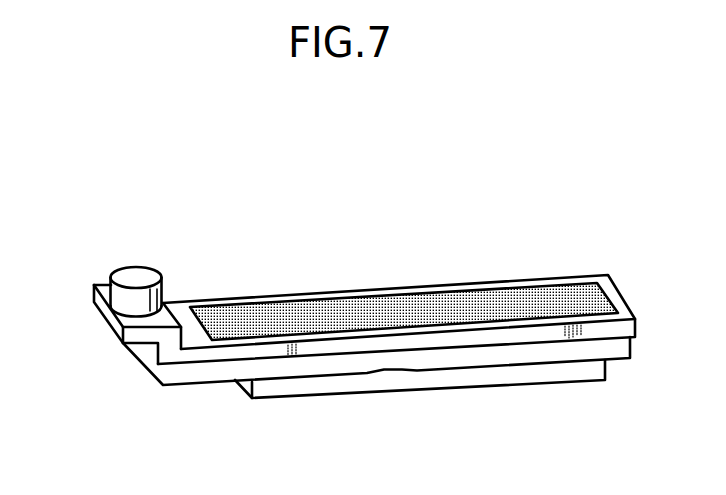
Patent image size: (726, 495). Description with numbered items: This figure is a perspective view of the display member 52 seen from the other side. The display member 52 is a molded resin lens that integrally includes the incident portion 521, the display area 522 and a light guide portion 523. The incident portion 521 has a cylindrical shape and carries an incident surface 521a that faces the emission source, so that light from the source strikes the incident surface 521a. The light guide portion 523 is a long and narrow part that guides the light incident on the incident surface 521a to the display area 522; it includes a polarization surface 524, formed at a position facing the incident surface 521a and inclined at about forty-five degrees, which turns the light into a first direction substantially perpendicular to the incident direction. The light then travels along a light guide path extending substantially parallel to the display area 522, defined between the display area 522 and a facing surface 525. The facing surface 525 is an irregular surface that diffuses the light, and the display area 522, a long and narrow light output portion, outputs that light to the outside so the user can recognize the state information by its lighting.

The display member 52 is at (349, 230).
The incident portion 521 is at (164, 285).
The incident surface 521a is at (129, 279).
The display area 522 is at (485, 386).
The light guide portion 523 is at (426, 287).
The polarization surface 524 is at (204, 383).
The facing surface 525 is at (512, 307).